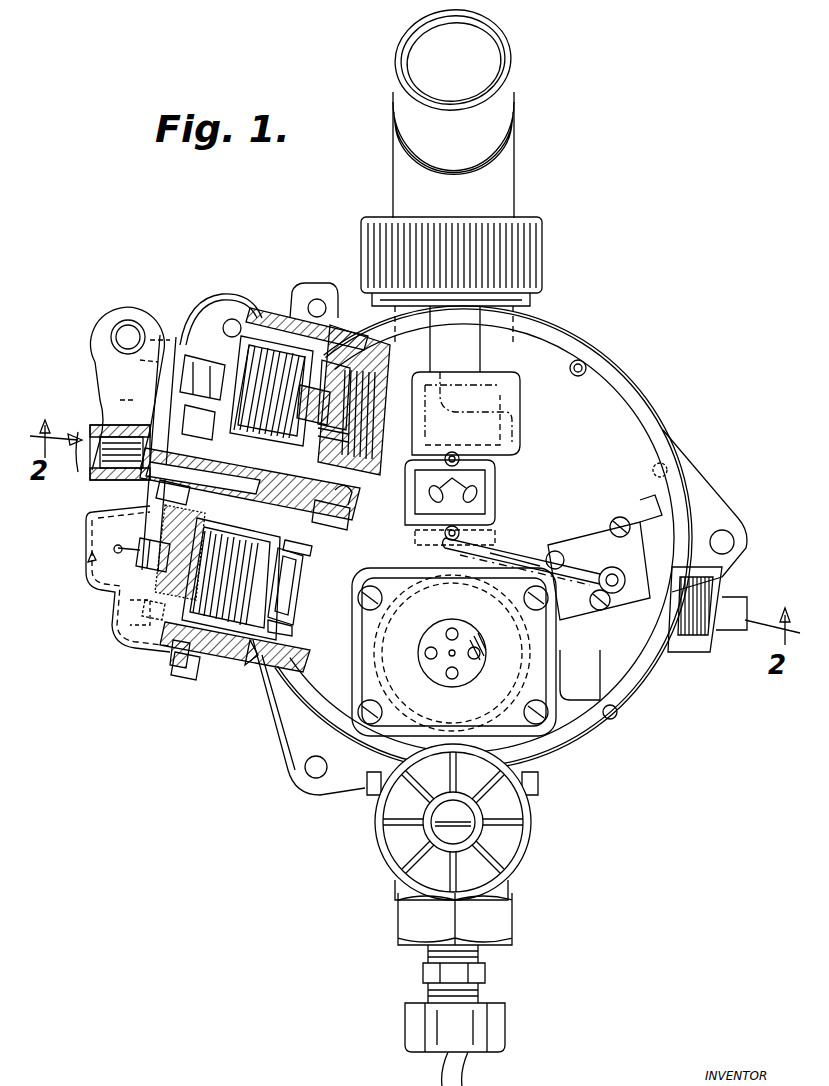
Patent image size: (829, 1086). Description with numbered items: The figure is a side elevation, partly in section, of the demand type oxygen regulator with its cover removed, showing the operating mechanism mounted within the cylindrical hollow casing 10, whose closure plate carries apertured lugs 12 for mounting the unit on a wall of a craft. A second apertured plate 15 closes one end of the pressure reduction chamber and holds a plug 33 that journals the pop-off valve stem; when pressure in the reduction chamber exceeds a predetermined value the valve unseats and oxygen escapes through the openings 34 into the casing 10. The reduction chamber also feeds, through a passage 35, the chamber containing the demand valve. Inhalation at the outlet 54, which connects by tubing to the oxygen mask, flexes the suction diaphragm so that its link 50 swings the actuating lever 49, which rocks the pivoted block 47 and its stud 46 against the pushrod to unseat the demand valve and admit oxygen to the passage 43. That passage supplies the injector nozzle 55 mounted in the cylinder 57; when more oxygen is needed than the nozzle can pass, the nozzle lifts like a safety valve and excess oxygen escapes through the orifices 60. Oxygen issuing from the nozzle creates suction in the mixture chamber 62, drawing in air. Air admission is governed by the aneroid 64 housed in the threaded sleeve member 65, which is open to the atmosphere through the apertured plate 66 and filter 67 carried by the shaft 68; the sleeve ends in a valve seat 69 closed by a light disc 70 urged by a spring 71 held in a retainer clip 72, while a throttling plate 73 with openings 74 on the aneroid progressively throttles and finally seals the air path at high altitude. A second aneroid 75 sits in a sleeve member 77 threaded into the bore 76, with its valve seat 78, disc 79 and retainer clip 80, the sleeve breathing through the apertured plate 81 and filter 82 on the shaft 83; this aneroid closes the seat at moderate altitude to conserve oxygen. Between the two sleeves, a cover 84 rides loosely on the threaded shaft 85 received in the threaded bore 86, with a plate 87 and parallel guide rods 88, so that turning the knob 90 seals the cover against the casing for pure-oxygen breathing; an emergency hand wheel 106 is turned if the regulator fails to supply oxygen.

The casing 10 is at (598, 330).
The apertured lugs 12 is at (315, 292).
The second apertured plate 15 is at (508, 710).
The plug 33 is at (445, 630).
The openings 34 is at (458, 634).
The passage 35 is at (582, 675).
The passage 43 is at (520, 555).
The stud 46 is at (638, 525).
The block 47 is at (592, 552).
The actuating lever 49 is at (556, 552).
The link 50 is at (440, 538).
The outlet 54 is at (500, 176).
The injector nozzle 55 is at (520, 420).
The cylinder 57 is at (485, 472).
The orifices 60 is at (452, 487).
The mixture chamber 62 is at (362, 513).
The aneroid 64 is at (283, 300).
The sleeve member 65 is at (243, 300).
The apertured plate 66 is at (225, 328).
The filter 67 is at (183, 330).
The shaft 68 is at (189, 422).
The valve seat 69 is at (355, 318).
The disc 70 is at (322, 430).
The spring 71 is at (378, 414).
The retainer clip 72 is at (338, 515).
The throttling plate 73 is at (332, 322).
The openings 74 is at (319, 405).
The second aneroid 75 is at (210, 655).
The threaded bore 76 is at (183, 666).
The sleeve member 77 is at (178, 642).
The valve seat 78 is at (256, 656).
The disc 79 is at (294, 580).
The retainer clip 80 is at (290, 612).
The apertured plate 81 is at (158, 630).
The filter 82 is at (145, 612).
The shaft 83 is at (145, 578).
The cover 84 is at (100, 548).
The threaded shaft 85 is at (160, 494).
The threaded bore 86 is at (321, 542).
The plate 87 is at (113, 438).
The guide rods 88 is at (170, 475).
The knob 90 is at (112, 318).
The emergency hand wheel 106 is at (510, 822).